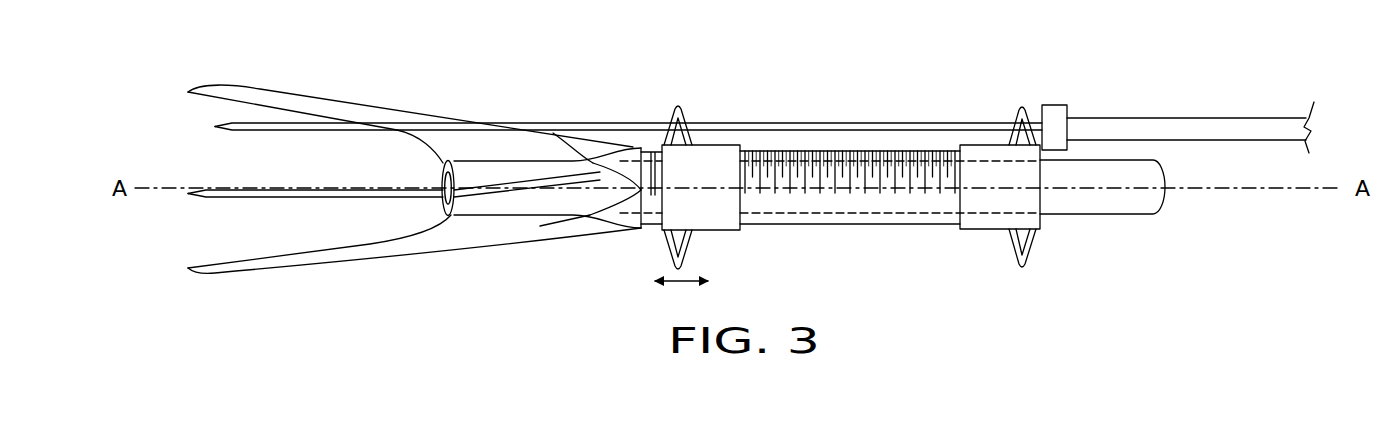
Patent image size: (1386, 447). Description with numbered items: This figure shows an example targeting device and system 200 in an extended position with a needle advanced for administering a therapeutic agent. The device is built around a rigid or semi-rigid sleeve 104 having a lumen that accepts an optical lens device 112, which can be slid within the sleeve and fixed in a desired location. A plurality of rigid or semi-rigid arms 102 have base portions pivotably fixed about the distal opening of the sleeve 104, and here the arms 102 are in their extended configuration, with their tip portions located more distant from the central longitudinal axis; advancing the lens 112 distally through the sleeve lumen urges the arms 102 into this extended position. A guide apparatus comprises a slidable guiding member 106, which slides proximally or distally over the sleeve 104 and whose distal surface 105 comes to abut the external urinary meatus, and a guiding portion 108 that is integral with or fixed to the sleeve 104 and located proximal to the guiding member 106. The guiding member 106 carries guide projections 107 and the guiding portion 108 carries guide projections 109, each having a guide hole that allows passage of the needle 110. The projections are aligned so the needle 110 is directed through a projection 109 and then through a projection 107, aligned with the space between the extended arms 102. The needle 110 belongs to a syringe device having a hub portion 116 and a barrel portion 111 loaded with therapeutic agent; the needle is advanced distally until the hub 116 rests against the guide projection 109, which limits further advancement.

The arms 102 is at (281, 91).
The sleeve 104 is at (937, 224).
The distal surface 105 is at (593, 163).
The slidable guiding member 106 is at (723, 145).
The guide projection 107 is at (676, 103).
The guiding portion 108 is at (1027, 197).
The guide projection 109 is at (1013, 112).
The needle 110 is at (885, 123).
The barrel portion 111 is at (1183, 118).
The optical lens device 112 is at (440, 170).
The hub portion 116 is at (1053, 104).
The device 200 is at (466, 280).